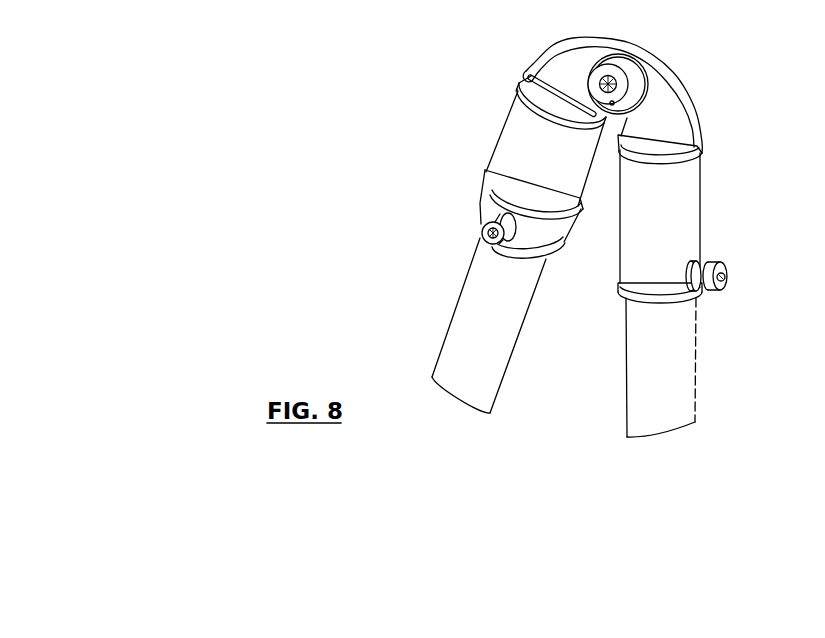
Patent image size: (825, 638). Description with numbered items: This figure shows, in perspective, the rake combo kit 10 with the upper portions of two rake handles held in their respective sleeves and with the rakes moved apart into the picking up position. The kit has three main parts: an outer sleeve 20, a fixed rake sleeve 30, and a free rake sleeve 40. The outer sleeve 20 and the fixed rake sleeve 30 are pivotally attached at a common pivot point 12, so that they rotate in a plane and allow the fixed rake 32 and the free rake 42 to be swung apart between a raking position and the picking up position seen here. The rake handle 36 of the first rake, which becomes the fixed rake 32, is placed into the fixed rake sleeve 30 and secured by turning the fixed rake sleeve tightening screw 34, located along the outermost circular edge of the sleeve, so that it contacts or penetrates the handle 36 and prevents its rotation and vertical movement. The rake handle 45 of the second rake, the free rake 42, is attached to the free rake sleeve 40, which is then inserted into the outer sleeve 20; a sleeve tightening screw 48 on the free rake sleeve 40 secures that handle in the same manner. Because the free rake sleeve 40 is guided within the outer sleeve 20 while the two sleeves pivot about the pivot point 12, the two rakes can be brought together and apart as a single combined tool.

The rake combo kit 10 is at (728, 86).
The common pivot point 12 is at (617, 84).
The outer sleeve 20 is at (515, 125).
The fixed rake sleeve 30 is at (699, 206).
The fixed rake 32 is at (704, 382).
The fixed rake sleeve tightening screw 34 is at (725, 276).
The rake handle 36 is at (690, 340).
The free rake sleeve 40 is at (483, 208).
The free rake 42 is at (433, 331).
The rake handle 45 is at (457, 292).
The sleeve tightening screw 48 is at (485, 228).